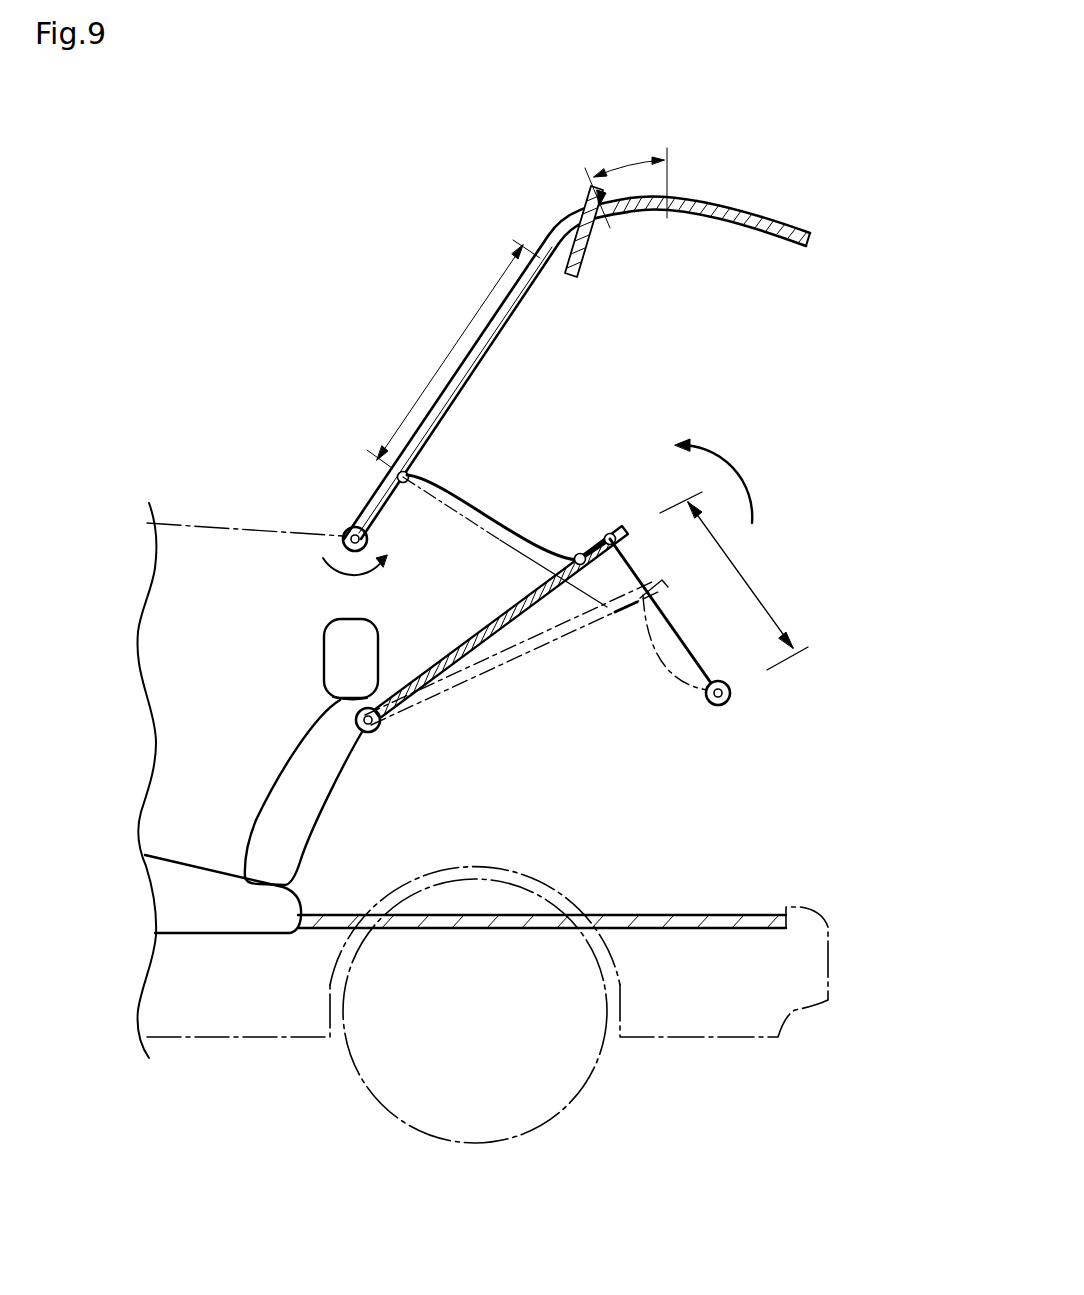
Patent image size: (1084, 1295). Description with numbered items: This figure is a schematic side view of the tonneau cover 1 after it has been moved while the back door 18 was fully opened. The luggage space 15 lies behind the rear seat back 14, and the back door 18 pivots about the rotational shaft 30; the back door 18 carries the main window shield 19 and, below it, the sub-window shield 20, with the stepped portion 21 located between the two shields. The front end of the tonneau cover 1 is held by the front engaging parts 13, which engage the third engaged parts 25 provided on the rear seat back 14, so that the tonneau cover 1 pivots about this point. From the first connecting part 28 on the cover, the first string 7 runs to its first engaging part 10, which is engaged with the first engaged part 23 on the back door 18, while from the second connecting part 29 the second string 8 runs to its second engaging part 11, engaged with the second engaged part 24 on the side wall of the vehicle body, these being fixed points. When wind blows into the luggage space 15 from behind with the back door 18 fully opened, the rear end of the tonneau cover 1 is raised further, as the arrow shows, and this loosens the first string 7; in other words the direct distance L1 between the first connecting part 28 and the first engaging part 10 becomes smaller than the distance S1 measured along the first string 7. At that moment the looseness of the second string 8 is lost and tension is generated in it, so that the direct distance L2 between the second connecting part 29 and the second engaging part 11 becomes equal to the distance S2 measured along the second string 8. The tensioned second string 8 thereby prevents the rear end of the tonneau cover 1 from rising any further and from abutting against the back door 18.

The tonneau cover 1 is at (438, 661).
The first string 7 is at (493, 516).
The second string 8 is at (692, 652).
The first engaging part 10 is at (490, 432).
The first engaged part 23 is at (410, 470).
The second engaging part 11 is at (781, 703).
The second engaged part 24 is at (730, 694).
The front engaging part 13 is at (423, 740).
The third engaged part 25 is at (378, 729).
The rear seat back 14 is at (303, 822).
The luggage space 15 is at (567, 824).
The back door 18 is at (701, 200).
The main window shield 19 is at (452, 345).
The sub-window shield 20 is at (628, 162).
The stepped portion 21 is at (559, 271).
The first connecting part 28 is at (579, 553).
The second connecting part 29 is at (607, 533).
The rotational shaft 30 is at (350, 526).
The direct distance L1 is at (489, 531).
The distance along first string S1 is at (507, 545).
The direct distance L2 is at (765, 554).
The distance along second string S2 is at (742, 577).